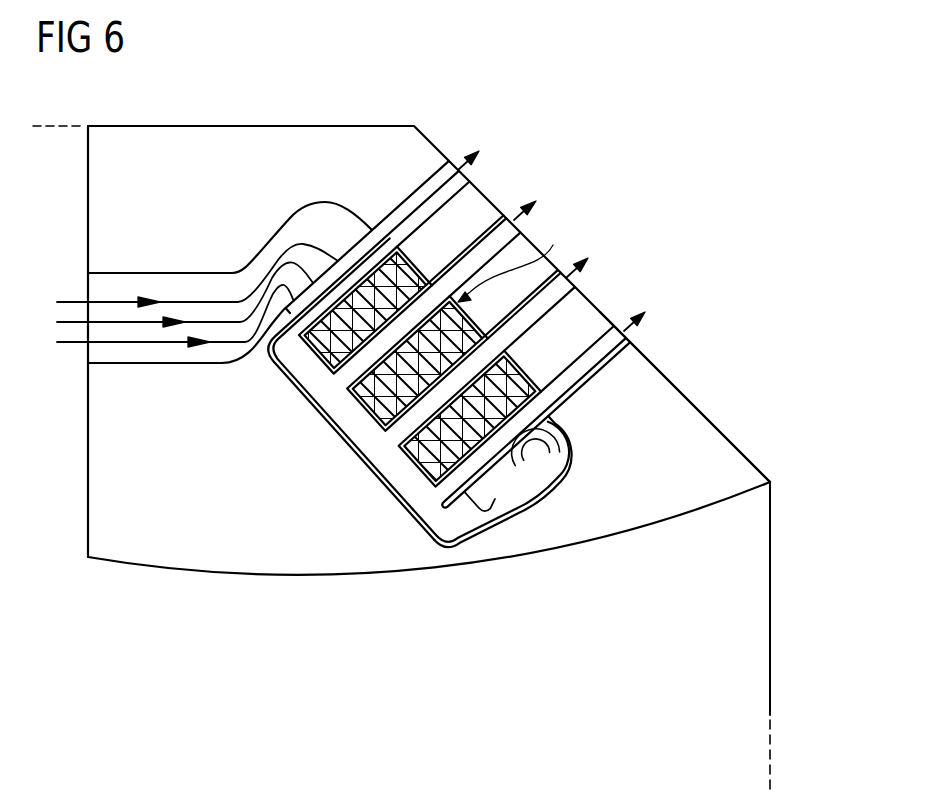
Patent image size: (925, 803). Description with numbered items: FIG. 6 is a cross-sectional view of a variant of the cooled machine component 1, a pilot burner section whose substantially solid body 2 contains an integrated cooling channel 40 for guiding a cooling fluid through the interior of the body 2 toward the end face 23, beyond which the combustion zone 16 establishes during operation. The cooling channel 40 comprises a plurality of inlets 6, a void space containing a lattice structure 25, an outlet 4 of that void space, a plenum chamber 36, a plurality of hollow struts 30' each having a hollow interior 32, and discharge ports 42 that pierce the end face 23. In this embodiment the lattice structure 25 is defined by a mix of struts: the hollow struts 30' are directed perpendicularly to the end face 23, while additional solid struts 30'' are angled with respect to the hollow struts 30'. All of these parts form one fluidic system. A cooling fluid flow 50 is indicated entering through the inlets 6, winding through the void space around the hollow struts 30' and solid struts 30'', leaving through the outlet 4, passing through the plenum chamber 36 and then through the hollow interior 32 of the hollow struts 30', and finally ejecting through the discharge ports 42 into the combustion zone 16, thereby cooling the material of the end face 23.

The cooled machine component 1 is at (228, 128).
The body 2 is at (231, 484).
The outlet 4 is at (527, 488).
The inlets 6 is at (177, 283).
The combustion zone 16 is at (856, 497).
The end face 23 is at (683, 389).
The lattice structure 25 is at (515, 261).
The hollow struts 30' is at (526, 508).
The solid struts 30'' is at (456, 345).
The hollow interior 32 is at (596, 373).
The plenum chamber 36 is at (346, 446).
The cooling channel 40 is at (96, 283).
The discharge ports 42 is at (489, 158).
The cooling fluid flow 50 is at (113, 300).